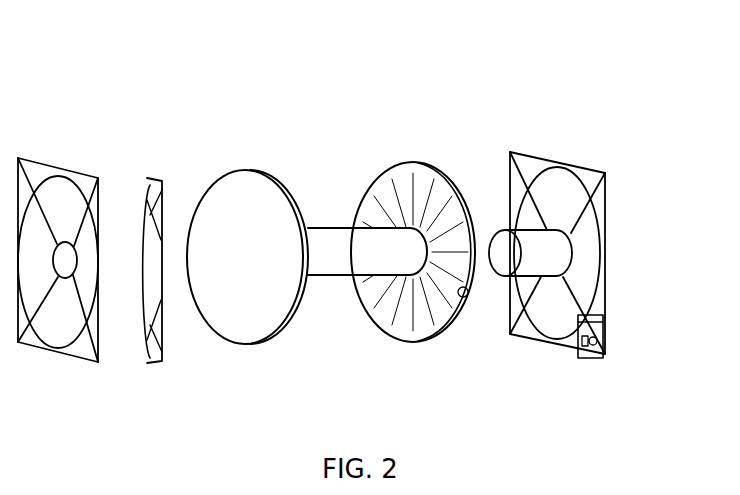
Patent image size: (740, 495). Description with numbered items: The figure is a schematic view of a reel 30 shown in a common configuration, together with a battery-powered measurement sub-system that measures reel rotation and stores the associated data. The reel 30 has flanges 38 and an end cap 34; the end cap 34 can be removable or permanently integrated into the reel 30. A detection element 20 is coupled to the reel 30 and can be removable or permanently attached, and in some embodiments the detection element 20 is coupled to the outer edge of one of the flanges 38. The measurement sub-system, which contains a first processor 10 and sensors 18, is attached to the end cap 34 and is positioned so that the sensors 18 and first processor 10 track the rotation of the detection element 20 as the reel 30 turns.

The first processor 10 is at (574, 286).
The sensors 18 is at (580, 352).
The detection element 20 is at (465, 297).
The reel 30 is at (258, 310).
The end cap 34 is at (82, 174).
The flange 38 is at (471, 222).